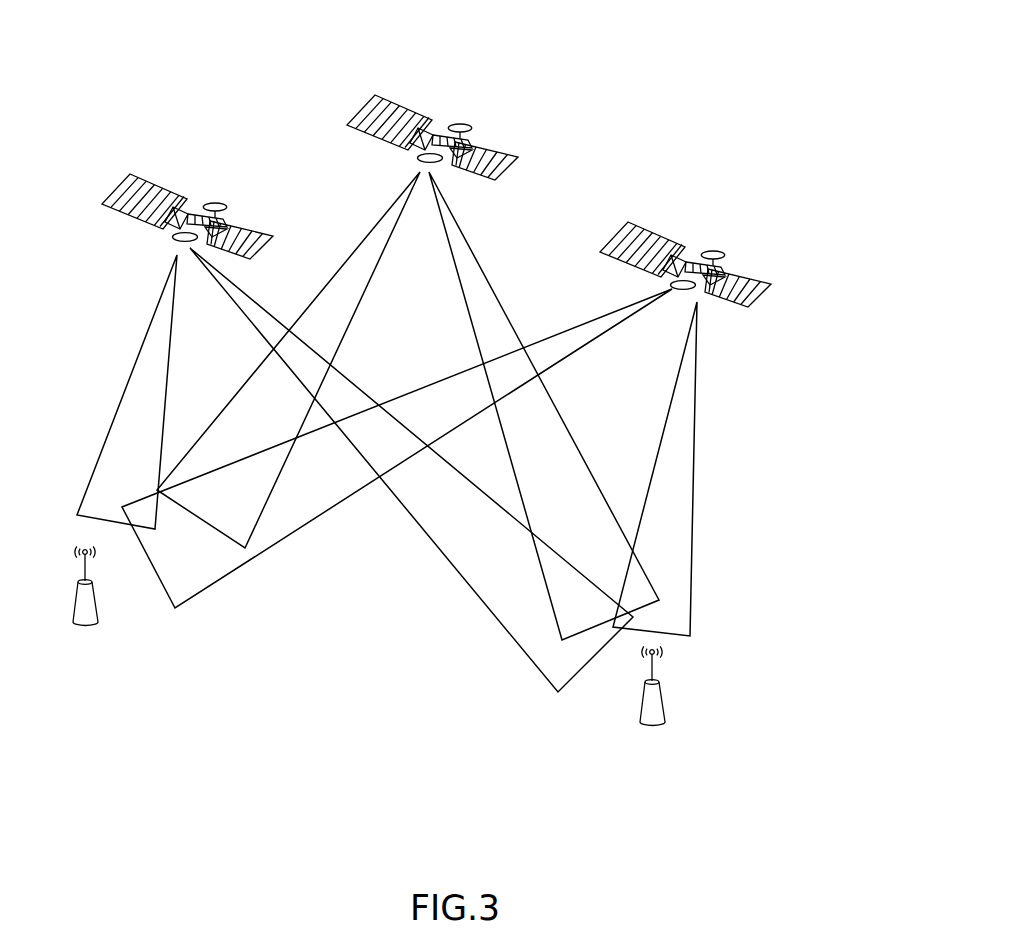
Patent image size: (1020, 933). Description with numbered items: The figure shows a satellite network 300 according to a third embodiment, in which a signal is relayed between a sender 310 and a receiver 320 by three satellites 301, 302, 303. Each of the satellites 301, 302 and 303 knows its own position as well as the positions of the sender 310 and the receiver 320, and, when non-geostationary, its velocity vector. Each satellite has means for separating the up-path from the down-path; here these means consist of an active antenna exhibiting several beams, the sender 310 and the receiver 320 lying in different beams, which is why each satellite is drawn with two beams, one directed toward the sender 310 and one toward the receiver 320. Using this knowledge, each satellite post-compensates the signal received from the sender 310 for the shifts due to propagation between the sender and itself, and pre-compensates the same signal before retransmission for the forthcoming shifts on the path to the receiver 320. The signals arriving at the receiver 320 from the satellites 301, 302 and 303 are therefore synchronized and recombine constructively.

The satellite network 300 is at (643, 103).
The satellite 301 is at (208, 197).
The satellite 302 is at (465, 122).
The satellite 303 is at (712, 248).
The sender 310 is at (98, 623).
The receiver 320 is at (663, 732).